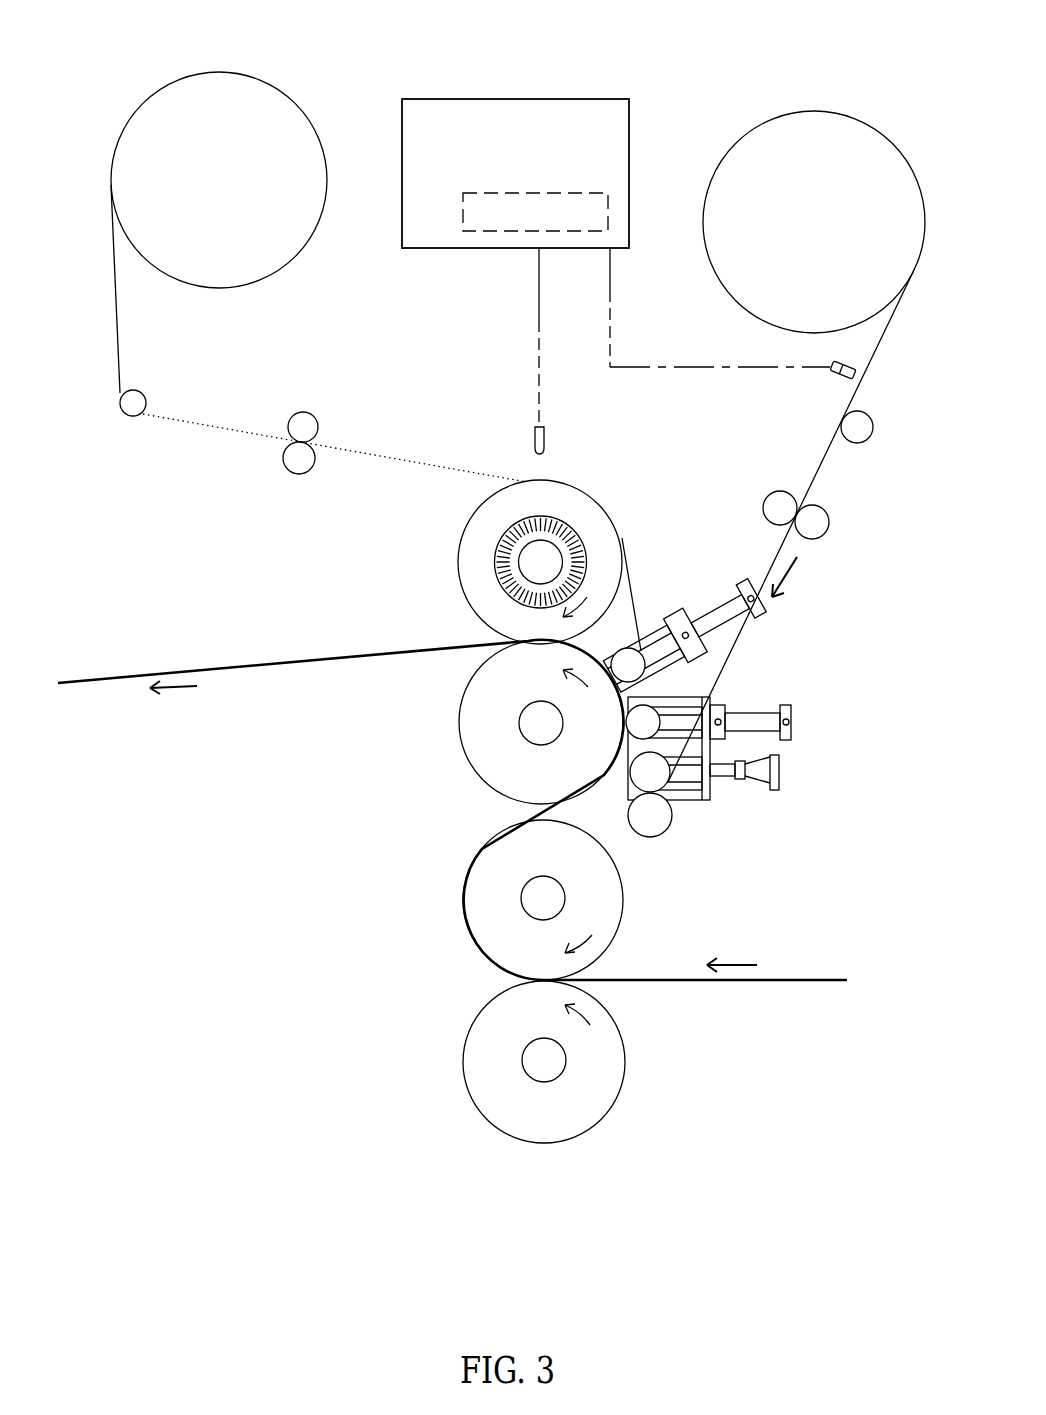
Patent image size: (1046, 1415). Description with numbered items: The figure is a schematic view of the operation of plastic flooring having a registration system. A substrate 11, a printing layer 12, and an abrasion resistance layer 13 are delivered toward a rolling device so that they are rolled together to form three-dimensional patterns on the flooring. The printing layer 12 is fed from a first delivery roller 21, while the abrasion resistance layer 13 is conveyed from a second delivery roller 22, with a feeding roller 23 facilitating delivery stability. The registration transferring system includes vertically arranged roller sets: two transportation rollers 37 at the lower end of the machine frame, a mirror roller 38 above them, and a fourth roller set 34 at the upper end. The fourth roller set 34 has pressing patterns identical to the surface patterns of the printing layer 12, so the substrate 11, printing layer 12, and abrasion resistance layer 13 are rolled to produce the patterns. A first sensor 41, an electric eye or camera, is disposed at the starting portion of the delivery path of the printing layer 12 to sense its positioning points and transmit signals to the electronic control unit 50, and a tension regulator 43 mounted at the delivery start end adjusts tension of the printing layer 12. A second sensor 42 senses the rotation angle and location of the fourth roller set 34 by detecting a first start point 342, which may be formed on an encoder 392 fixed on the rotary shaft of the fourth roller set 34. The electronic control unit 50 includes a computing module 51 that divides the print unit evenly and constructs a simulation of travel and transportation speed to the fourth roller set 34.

The substrate 11 is at (814, 978).
The printing layer 12 is at (893, 318).
The abrasion resistance layer 13 is at (182, 423).
The first delivery roller 21 is at (821, 147).
The second delivery roller 22 is at (230, 93).
The feeding roller 23 is at (308, 422).
The fourth roller set 34 is at (514, 560).
The first start point 342 is at (540, 527).
The transportation rollers 37 is at (605, 928).
The mirror roller 38 is at (477, 731).
The encoder 392 is at (499, 574).
The first sensor 41 is at (838, 372).
The second sensor 42 is at (545, 433).
The tension regulator 43 is at (865, 432).
The electronic control unit 50 is at (618, 112).
The computing module 51 is at (451, 232).